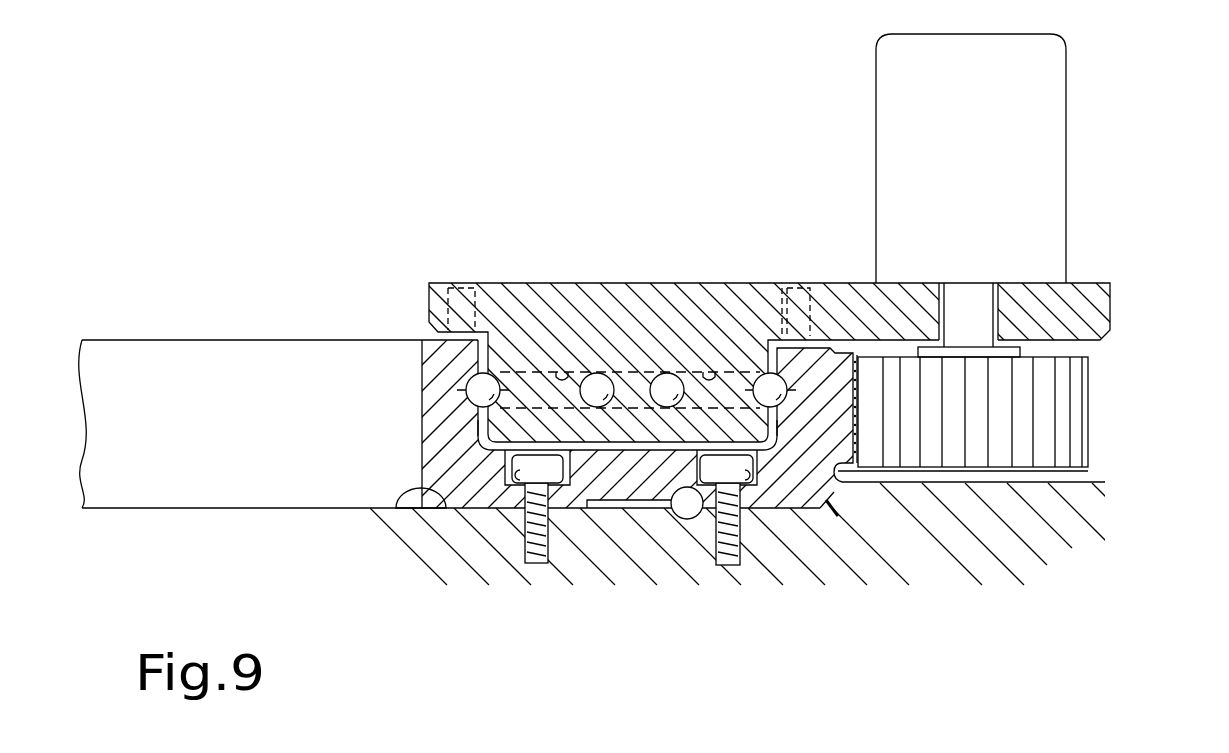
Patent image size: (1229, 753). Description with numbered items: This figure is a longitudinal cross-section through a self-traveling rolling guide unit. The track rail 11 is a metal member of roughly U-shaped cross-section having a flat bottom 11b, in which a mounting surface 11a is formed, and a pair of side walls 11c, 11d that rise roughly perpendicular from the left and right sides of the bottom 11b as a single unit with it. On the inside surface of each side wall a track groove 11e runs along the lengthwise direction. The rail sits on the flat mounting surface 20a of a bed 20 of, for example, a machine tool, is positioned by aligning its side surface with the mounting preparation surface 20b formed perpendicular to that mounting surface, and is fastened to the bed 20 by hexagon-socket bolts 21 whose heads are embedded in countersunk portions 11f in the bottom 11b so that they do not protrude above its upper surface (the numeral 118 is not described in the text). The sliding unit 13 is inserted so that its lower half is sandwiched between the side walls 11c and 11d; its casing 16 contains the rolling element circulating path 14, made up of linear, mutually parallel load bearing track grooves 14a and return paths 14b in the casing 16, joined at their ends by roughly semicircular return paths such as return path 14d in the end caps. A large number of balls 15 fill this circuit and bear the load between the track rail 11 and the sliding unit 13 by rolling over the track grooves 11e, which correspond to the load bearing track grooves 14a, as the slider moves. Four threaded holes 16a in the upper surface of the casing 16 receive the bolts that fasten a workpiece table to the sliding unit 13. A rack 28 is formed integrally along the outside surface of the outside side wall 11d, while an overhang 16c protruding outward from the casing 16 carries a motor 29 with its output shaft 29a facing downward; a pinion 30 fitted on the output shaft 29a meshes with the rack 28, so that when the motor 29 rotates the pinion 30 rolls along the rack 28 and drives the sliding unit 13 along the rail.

The track rail 11 is at (550, 500).
The mounting surface 11a is at (674, 573).
The bottom 11b is at (627, 555).
The side wall 11c is at (437, 420).
The outside side wall 11d is at (828, 504).
The track groove 11e is at (460, 384).
The countersunk portion 11f is at (600, 540).
The counterbore 118 is at (611, 555).
The sliding unit 13 is at (753, 293).
The rolling element circulating path 14 is at (733, 369).
The load bearing track groove 14a is at (489, 368).
The return path 14b is at (615, 376).
The return path 14d is at (556, 370).
The ball 15 is at (673, 373).
The casing 16 is at (490, 298).
The threaded hole 16a is at (448, 325).
The overhang 16c is at (1097, 292).
The bed 20 is at (740, 561).
The mounting surface 20a is at (385, 574).
The mounting preparation surface 20b is at (894, 561).
The bolt 21 is at (631, 557).
The rack 28 is at (925, 505).
The motor 29 is at (1058, 113).
The output shaft 29a is at (987, 325).
The pinion 30 is at (1088, 408).